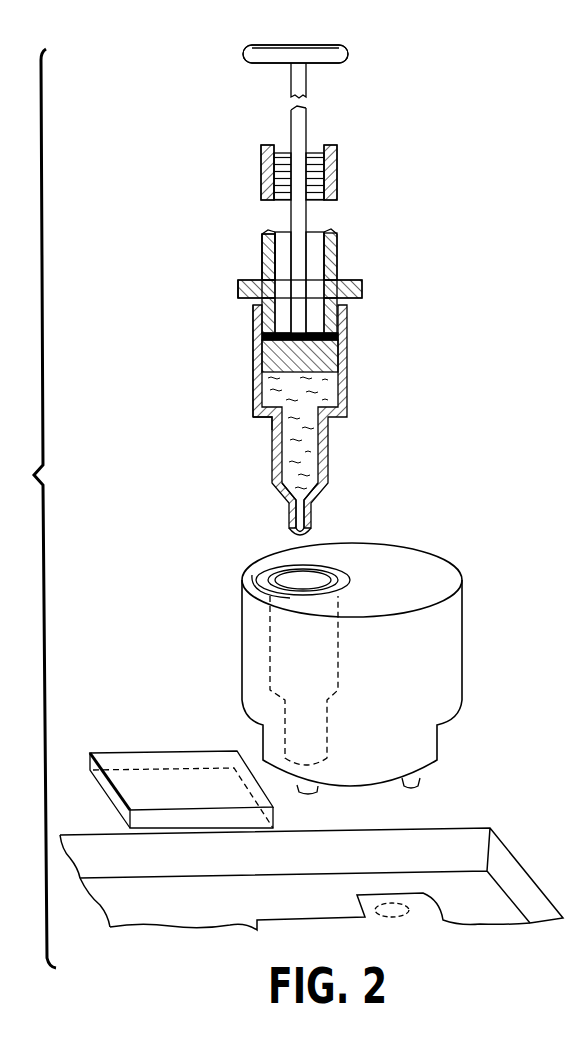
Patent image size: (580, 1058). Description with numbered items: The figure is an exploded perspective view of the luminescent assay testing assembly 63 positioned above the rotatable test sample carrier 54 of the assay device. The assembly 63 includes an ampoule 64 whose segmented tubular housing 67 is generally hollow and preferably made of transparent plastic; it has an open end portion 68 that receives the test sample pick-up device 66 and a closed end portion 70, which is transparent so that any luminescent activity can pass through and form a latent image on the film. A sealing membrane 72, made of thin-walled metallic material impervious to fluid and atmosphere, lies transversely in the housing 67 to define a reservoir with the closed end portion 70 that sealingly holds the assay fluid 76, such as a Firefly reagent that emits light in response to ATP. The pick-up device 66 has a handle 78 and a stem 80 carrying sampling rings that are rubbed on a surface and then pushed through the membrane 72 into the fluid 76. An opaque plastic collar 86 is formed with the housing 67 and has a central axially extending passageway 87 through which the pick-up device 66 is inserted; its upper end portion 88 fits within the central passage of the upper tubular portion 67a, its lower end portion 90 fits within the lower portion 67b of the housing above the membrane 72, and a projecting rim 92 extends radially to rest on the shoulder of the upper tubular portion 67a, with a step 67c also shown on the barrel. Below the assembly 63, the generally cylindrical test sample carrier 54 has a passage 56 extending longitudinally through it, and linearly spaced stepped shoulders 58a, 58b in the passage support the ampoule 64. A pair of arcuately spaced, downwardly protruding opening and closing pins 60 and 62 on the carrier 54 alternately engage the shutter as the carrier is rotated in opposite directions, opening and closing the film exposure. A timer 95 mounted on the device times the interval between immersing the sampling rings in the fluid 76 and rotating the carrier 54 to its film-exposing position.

The test sample carrier 54 is at (242, 650).
The passage 56 is at (292, 580).
The stepped shoulder 58a is at (320, 578).
The stepped shoulder 58b is at (350, 578).
The opening pin 60 is at (305, 793).
The closing pin 62 is at (416, 788).
The luminescent assay testing assembly 63 is at (167, 263).
The ampoule 64 is at (256, 179).
The test sample pick-up device 66 is at (313, 121).
The tubular housing 67 is at (338, 172).
The upper tubular portion 67a is at (338, 247).
The lower portion 67b is at (253, 390).
The barrel step 67c is at (270, 420).
The open end portion 68 is at (318, 156).
The closed end portion 70 is at (330, 455).
The sealing membrane 72 is at (338, 360).
The assay fluid 76 is at (307, 465).
The handle 78 is at (346, 53).
The stem 80 is at (290, 79).
The plastic collar 86 is at (370, 290).
The central axially extending passageway 87 is at (290, 236).
The upper end portion 88 is at (262, 246).
The lower end portion 90 is at (254, 322).
The projecting rim 92 is at (238, 289).
The timer 95 is at (164, 772).